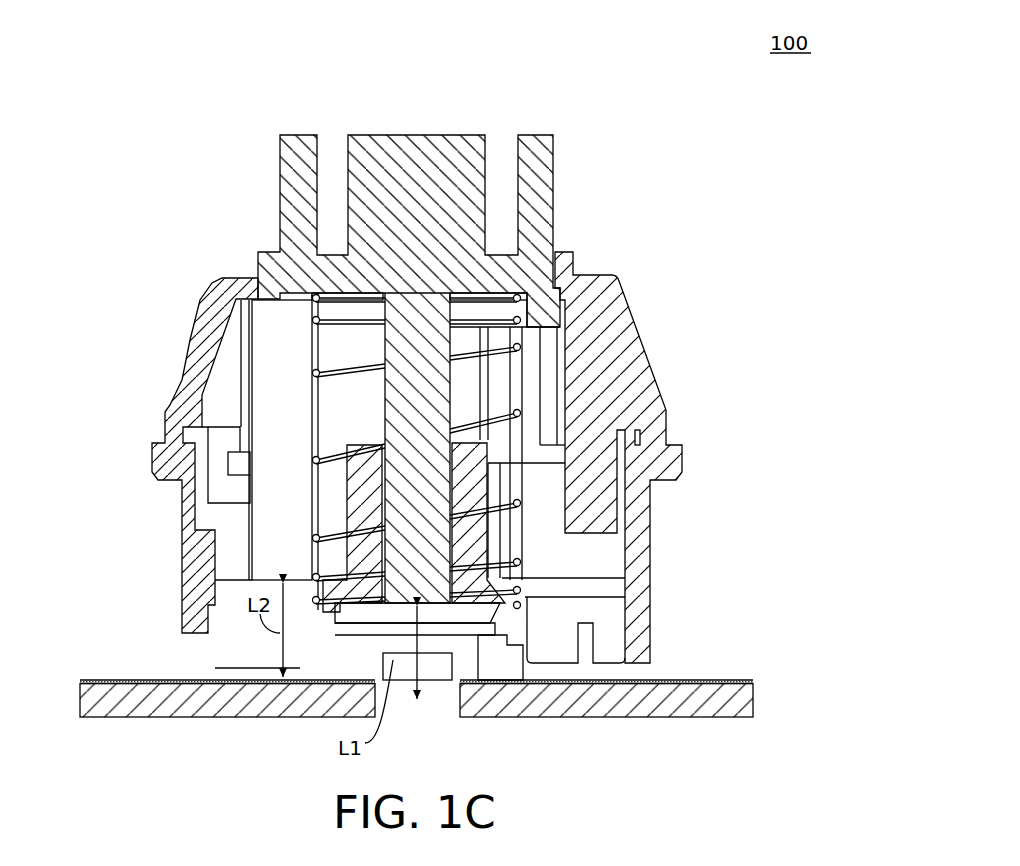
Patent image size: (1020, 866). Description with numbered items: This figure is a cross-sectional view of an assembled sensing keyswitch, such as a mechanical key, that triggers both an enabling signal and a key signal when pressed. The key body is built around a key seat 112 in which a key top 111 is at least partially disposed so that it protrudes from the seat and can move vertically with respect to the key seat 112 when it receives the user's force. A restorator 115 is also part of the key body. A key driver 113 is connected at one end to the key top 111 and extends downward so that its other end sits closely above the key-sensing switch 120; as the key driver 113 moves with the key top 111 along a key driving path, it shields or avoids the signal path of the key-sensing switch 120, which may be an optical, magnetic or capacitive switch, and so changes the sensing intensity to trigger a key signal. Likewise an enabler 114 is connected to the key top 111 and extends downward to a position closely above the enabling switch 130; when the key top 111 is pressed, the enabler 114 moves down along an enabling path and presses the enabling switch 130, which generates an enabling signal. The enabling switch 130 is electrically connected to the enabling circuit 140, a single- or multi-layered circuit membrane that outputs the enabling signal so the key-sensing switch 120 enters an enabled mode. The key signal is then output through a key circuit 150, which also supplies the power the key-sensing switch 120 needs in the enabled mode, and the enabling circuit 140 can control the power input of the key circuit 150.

The key top 111 is at (537, 163).
The key seat 112 is at (633, 350).
The key driver 113 is at (423, 397).
The enabler 114 is at (277, 358).
The restorator 115 is at (478, 320).
The key-sensing switch 120 is at (437, 663).
The enabling switch 130 is at (230, 669).
The enabling circuit 140 is at (132, 680).
The key circuit 150 is at (705, 707).